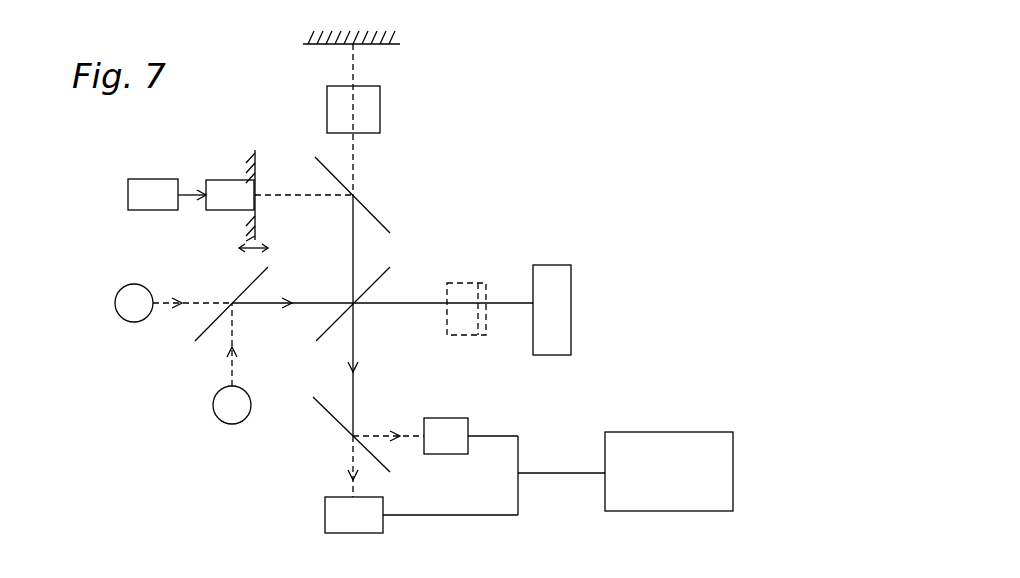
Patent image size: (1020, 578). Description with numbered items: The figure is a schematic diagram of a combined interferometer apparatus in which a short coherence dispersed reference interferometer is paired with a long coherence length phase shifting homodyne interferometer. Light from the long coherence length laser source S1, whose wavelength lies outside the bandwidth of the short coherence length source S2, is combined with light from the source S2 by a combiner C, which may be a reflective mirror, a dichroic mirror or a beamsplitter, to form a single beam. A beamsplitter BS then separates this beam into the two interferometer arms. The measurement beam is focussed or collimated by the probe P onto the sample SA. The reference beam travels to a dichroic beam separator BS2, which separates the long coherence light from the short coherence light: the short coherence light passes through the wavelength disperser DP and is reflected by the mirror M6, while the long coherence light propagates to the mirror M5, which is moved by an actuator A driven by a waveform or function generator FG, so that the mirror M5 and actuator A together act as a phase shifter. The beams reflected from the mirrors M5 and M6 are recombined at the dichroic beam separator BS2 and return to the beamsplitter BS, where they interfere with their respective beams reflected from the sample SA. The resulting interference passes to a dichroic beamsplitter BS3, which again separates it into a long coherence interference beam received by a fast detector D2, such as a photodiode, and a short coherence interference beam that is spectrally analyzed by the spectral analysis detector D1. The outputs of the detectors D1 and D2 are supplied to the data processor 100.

The mirror M6 is at (367, 42).
The wavelength disperser DP is at (369, 109).
The dichroic beam separator BS2 is at (363, 195).
The mirror M5 is at (252, 187).
The function generator FG is at (167, 194).
The actuator A is at (230, 195).
The long coherence length laser source S1 is at (173, 303).
The combiner C is at (219, 314).
The beamsplitter BS is at (334, 313).
The short coherence length source S2 is at (232, 363).
The probe P is at (466, 322).
The sample SA is at (571, 305).
The dichroic beamsplitter BS3 is at (337, 434).
The fast detector D2 is at (410, 436).
The spectral analysis detector D1 is at (354, 515).
The data processor 100 is at (672, 432).